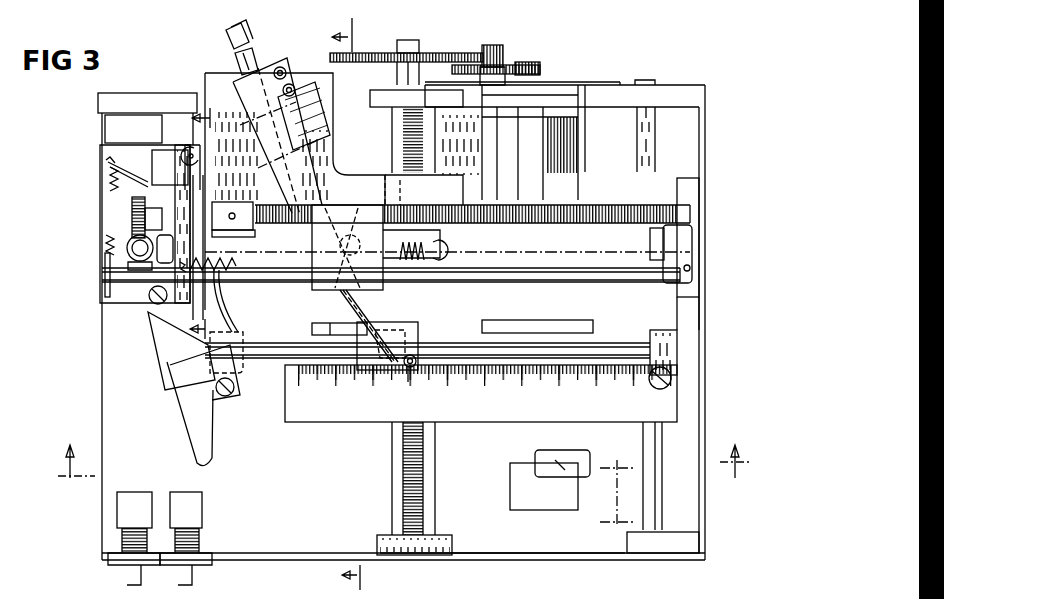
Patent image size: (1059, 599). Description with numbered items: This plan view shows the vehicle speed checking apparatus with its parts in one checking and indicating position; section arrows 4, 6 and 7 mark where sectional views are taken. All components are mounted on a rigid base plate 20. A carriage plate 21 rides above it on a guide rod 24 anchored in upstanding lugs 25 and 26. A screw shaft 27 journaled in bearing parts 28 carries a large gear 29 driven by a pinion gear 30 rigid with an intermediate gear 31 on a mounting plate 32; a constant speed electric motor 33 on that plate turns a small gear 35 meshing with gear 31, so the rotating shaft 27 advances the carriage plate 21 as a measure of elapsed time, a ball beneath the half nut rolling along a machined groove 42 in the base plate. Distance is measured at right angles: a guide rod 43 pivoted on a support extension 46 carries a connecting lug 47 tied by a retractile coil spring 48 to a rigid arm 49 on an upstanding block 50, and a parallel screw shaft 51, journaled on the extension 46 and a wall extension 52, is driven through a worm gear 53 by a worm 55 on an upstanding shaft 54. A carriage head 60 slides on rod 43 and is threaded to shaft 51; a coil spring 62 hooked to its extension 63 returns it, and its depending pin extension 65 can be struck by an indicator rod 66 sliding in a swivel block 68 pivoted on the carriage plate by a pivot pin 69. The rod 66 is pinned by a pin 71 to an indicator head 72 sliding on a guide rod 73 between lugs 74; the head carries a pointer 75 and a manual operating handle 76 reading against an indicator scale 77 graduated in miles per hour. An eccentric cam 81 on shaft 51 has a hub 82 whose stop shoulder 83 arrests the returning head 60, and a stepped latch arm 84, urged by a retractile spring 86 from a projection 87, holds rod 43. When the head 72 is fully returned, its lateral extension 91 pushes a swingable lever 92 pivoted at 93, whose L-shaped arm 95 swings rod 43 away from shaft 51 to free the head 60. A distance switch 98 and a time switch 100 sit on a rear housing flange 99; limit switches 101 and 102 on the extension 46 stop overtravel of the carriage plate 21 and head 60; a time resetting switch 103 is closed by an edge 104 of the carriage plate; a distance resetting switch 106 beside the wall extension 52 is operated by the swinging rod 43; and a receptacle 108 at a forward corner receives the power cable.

The section line 4- 4 is at (404, 473).
The section line 6- 6 is at (357, 304).
The section line 7- 7 is at (206, 229).
The base plate 20 is at (688, 432).
The carriage plate 21 is at (693, 312).
The guide rod 24 is at (652, 510).
The upstanding lug 25 is at (693, 96).
The upstanding lug 26 is at (690, 545).
The screw shaft 27 is at (403, 494).
The bearing part 28 is at (372, 107).
The gear 29 is at (368, 52).
The pinion gear 30 is at (503, 52).
The intermediate-size gear 31 is at (440, 62).
The mounting plate 32 is at (568, 84).
The constant speed electric motor 33 is at (493, 164).
The small gear 35 is at (540, 68).
The machined groove 42 is at (425, 460).
The guide rod 43 is at (512, 284).
The support extension 46 is at (693, 193).
The connecting lug 47 is at (105, 278).
The retractile coil spring 48 is at (105, 243).
The rigid arm 49 is at (108, 165).
The upstanding block 50 is at (130, 302).
The screw shaft 51 is at (492, 222).
The wall extension 52 is at (188, 195).
The worm gear 53 is at (130, 212).
The upstanding shaft 54 is at (135, 245).
The worm 55 is at (130, 260).
The carriage head 60 is at (325, 288).
The retractile coil spring 62 is at (430, 280).
The extension 63 is at (442, 240).
The pin extension 65 is at (380, 206).
The indicator rod 66 is at (236, 65).
The swivel block 68 is at (265, 72).
The pivot pin 69 is at (308, 92).
The pin 71 is at (387, 346).
The indicator head 72 is at (390, 324).
The guide rod 73 is at (455, 335).
The lugs 74 is at (693, 347).
The pointer 75 is at (410, 382).
The manual operating handle 76 is at (418, 360).
The indicator scale 77 is at (672, 410).
The eccentric cam 81 is at (220, 212).
The hub 82 is at (243, 236).
The stop shoulder 83 is at (278, 210).
The stepped latch arm 84 is at (172, 165).
The retractile spring 86 is at (185, 148).
The projection 87 is at (158, 158).
The lateral extension 91 is at (312, 328).
The swingable lever 92 is at (197, 440).
The pivot 93 is at (150, 322).
The L-shaped arm 95 is at (228, 316).
The distance on and off switch 98 is at (125, 510).
The housing flange 99 is at (528, 560).
The time on and off switch 100 is at (192, 508).
The limit switch 101 is at (650, 244).
The limit switch 102 is at (700, 246).
The time resetting switch 103 is at (550, 478).
The edge 104 is at (566, 320).
The distance resetting switch 106 is at (158, 262).
The receptacle 108 is at (110, 130).